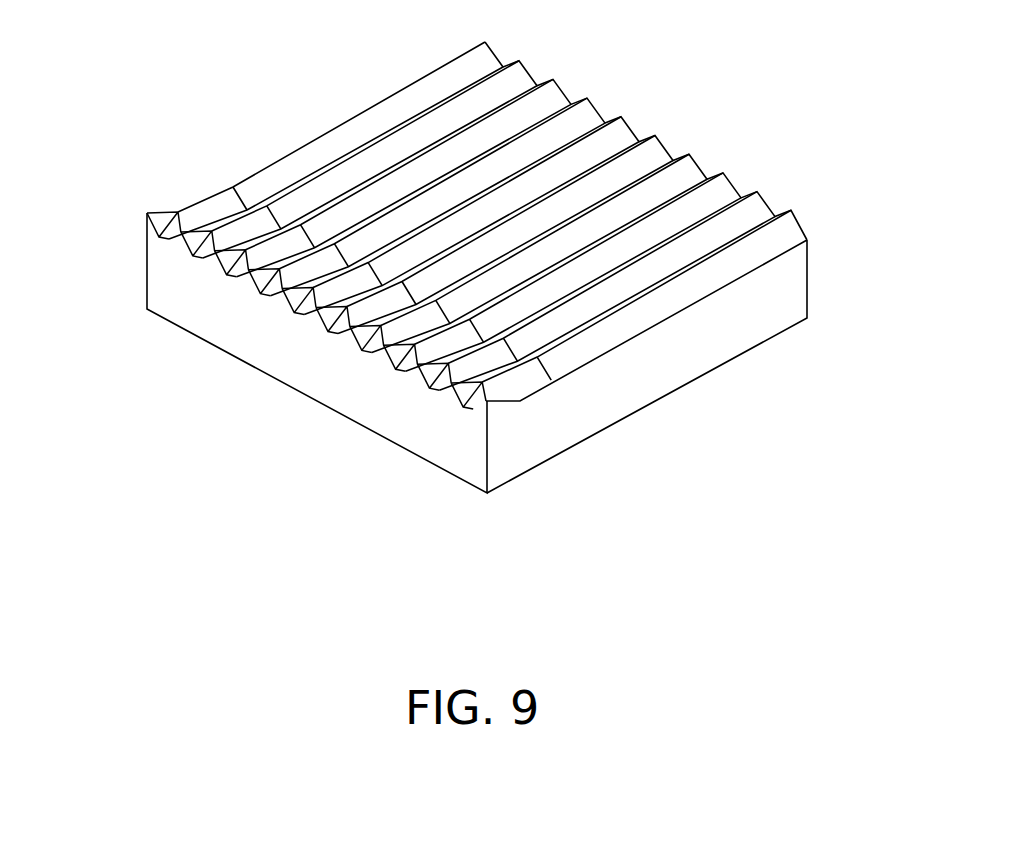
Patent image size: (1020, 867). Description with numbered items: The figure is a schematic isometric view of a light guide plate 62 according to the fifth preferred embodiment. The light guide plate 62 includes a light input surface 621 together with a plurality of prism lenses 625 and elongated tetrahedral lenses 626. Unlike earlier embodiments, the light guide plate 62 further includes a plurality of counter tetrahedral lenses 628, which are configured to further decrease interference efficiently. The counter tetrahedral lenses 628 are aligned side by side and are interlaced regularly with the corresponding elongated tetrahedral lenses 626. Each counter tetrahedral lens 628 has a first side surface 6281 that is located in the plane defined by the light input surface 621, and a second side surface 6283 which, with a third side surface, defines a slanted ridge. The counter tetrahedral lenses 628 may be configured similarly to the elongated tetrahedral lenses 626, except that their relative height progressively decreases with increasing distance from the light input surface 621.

The light guide plate 62 is at (373, 69).
The light input surface 621 is at (175, 278).
The prism lenses 625 is at (786, 233).
The elongated tetrahedral lenses 626 is at (537, 373).
The counter tetrahedral lenses 628 is at (684, 467).
The first side surface 6281 is at (452, 400).
The second side surface 6283 is at (485, 410).